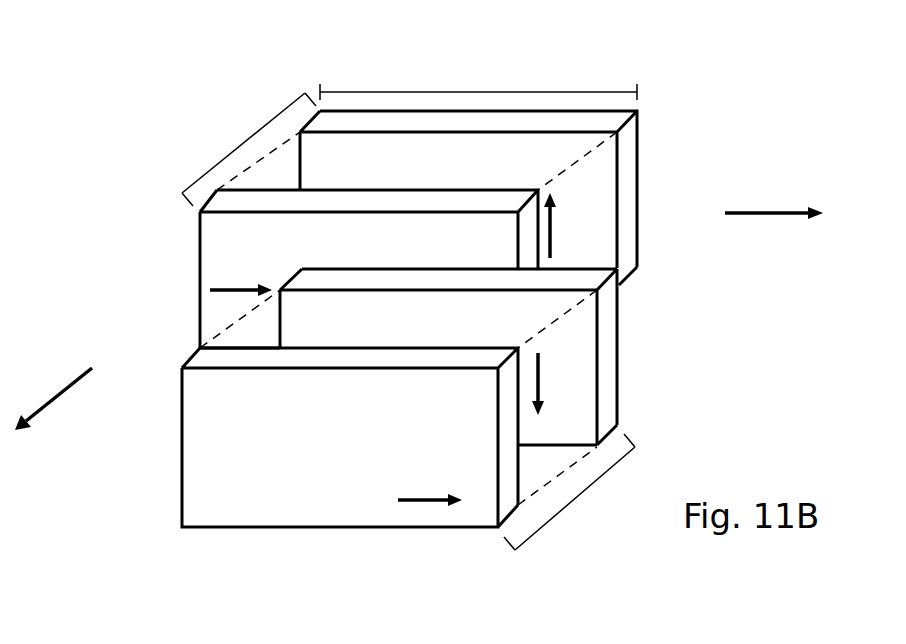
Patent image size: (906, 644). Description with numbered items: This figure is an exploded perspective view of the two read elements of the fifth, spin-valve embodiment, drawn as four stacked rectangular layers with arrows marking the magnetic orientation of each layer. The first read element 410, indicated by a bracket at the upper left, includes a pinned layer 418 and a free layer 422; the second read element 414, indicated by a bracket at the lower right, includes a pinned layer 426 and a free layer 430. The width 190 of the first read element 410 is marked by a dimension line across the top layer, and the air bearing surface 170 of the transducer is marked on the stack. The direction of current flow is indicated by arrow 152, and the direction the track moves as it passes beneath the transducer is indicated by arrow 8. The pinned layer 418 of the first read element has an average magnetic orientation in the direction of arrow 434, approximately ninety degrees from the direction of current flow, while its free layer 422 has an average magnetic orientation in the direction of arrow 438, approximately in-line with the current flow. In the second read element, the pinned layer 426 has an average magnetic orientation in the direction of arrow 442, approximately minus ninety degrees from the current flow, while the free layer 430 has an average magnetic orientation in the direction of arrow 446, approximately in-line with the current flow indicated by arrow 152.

The arrow indicating track movement direction 8 is at (60, 398).
The arrow indicating direction of current flow 152 is at (767, 215).
The air bearing surface 170 is at (585, 280).
The width of first read element 190 is at (527, 92).
The first read element 410 is at (240, 147).
The second read element 414 is at (573, 502).
The pinned layer 418 is at (630, 135).
The free layer 422 is at (217, 298).
The pinned layer 426 is at (605, 388).
The free layer 430 is at (198, 480).
The arrow indicating magnetic orientation of pinned layer 434 is at (552, 243).
The arrow indicating magnetic orientation of free layer 438 is at (240, 290).
The arrow indicating magnetic orientation of pinned layer 442 is at (540, 383).
The arrow indicating magnetic orientation of free layer 446 is at (428, 500).